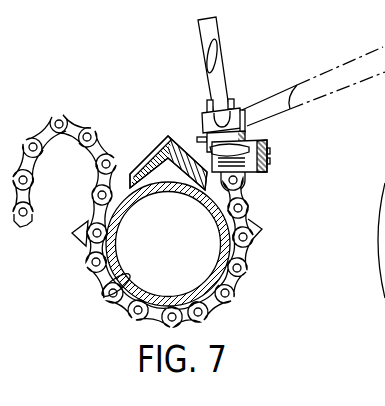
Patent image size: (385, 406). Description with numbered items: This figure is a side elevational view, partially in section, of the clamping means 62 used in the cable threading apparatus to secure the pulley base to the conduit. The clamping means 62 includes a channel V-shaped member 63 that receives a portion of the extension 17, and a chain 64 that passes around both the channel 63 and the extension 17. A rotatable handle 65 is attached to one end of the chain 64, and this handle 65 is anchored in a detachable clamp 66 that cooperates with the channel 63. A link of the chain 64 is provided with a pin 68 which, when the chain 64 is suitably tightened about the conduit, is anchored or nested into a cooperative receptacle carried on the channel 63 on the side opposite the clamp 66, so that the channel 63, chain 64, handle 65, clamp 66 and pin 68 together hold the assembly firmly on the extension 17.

The extension 17 is at (111, 293).
The clamping means 62 is at (272, 225).
The channel V-shaped member 63 is at (163, 137).
The chain 64 is at (250, 268).
The rotatable handle 65 is at (207, 79).
The detachable clamp 66 is at (268, 141).
The pin 68 is at (93, 186).